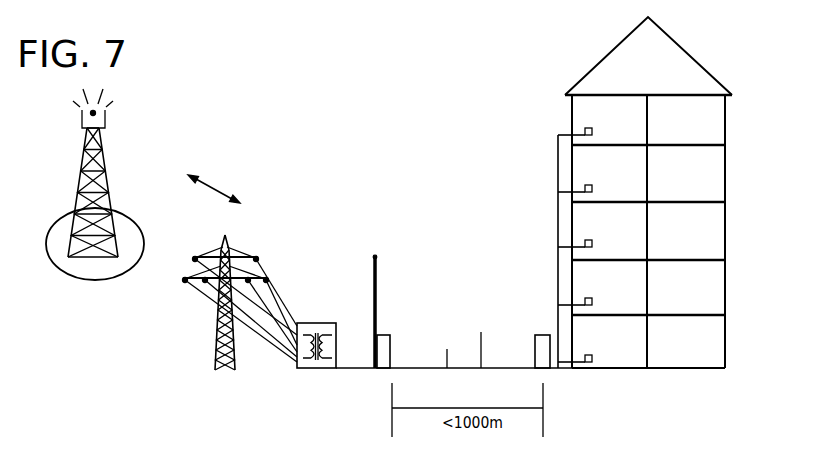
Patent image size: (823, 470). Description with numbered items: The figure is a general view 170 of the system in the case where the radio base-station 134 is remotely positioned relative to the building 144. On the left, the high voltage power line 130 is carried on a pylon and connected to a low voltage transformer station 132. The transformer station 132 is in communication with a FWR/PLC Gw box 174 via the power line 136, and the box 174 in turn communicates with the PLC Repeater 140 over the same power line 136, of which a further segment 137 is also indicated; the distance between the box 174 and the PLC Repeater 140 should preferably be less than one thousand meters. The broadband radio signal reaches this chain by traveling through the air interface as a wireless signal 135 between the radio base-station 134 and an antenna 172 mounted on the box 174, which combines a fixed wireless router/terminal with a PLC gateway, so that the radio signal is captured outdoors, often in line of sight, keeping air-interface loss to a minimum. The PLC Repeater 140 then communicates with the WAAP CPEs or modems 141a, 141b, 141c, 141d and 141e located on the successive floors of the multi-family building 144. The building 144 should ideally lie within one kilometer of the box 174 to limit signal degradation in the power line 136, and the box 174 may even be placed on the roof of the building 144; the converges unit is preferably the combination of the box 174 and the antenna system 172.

The high voltage power line 130 is at (242, 252).
The low voltage transformer station 132 is at (316, 323).
The radio base-station 134 is at (98, 150).
The wireless signal 135 is at (213, 186).
The power line 136 is at (446, 348).
The power line segment 137 is at (481, 338).
The PLC Repeater 140 is at (537, 335).
The WAAP CPE 141a is at (585, 130).
The WAAP CPE 141b is at (585, 187).
The WAAP CPE 141c is at (585, 242).
The WAAP CPE 141d is at (585, 300).
The WAAP CPE 141e is at (588, 363).
The building 144 is at (727, 124).
The general view 170 is at (315, 117).
The antenna 172 is at (372, 256).
The FWR/PLC Gw box 174 is at (372, 341).